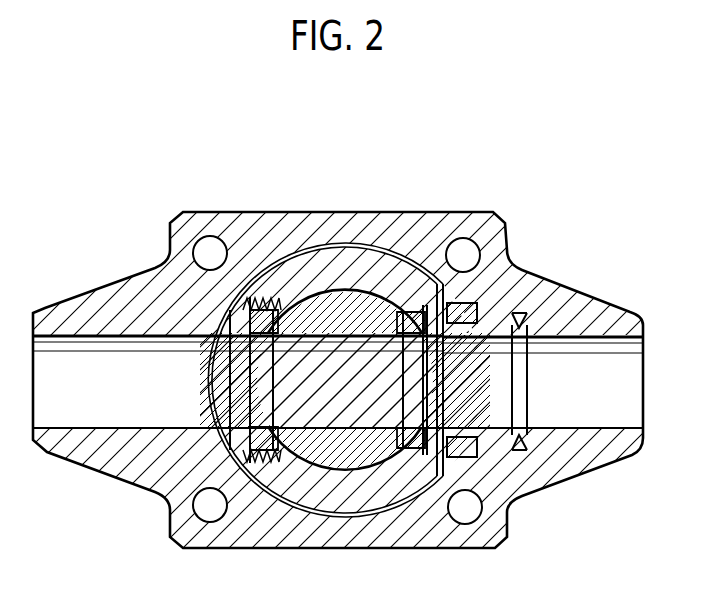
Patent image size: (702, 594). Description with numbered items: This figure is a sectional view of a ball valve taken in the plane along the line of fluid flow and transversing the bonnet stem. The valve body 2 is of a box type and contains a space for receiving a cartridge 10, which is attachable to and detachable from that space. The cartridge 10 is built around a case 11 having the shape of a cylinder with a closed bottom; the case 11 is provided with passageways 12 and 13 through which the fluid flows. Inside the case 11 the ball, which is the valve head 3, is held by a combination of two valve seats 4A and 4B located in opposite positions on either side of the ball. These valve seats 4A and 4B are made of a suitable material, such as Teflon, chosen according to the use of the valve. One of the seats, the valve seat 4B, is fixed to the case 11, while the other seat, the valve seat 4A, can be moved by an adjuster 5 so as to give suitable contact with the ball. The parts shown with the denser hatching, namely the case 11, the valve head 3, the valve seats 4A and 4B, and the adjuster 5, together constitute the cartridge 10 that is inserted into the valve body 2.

The valve body 2 is at (478, 216).
The valve head 3 is at (345, 430).
The valve seat 4A is at (259, 318).
The valve seat 4B is at (415, 325).
The adjuster 5 is at (240, 430).
The cartridge 10 is at (347, 396).
The case 11 is at (355, 268).
The passageway 12 is at (238, 380).
The passageway 13 is at (417, 398).